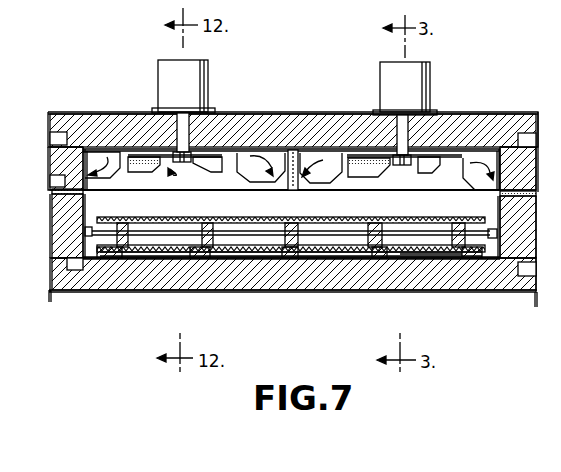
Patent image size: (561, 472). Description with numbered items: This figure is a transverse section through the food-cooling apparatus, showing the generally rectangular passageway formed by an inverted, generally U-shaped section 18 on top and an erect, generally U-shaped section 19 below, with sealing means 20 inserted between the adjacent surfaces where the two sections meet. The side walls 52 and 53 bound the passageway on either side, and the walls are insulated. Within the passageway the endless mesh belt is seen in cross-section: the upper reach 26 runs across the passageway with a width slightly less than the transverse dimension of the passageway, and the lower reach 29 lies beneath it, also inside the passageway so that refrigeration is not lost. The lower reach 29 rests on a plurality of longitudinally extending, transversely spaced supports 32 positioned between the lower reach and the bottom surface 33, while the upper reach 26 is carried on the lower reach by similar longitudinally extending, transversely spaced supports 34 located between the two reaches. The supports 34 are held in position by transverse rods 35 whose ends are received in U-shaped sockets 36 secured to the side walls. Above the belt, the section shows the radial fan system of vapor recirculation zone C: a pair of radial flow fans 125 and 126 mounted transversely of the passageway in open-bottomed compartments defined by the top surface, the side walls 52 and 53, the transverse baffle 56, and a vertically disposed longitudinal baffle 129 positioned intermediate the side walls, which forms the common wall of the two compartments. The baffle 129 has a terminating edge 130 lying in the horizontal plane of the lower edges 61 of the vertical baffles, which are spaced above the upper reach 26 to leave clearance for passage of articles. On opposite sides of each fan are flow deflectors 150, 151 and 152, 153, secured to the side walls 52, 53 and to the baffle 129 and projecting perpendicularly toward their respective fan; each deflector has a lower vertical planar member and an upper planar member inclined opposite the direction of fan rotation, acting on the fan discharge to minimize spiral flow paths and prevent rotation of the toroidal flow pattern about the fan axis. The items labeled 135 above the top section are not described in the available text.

The inverted U-shaped section 18 is at (279, 117).
The erect U-shaped section 19 is at (294, 292).
The sealing means 20 is at (65, 176).
The upper reach 26 is at (264, 217).
The lower reach 29 is at (430, 251).
The supports 32 is at (378, 253).
The bottom surface 33 is at (243, 255).
The supports 34 is at (124, 245).
The transverse rods 35 is at (110, 253).
The U-shaped sockets 36 is at (85, 233).
The side wall 52 is at (499, 209).
The side wall 53 is at (86, 208).
The baffle 56 is at (421, 188).
The lower edges 61 is at (423, 194).
The radial flow fan 125 is at (390, 168).
The radial flow fan 126 is at (172, 171).
The baffle 129 is at (296, 164).
The terminating edge 130 is at (293, 190).
The gas inlet cylinder 135 is at (168, 78).
The flow deflector 150 is at (467, 167).
The flow deflector 151 is at (327, 172).
The flow deflector 152 is at (255, 170).
The flow deflector 153 is at (110, 179).